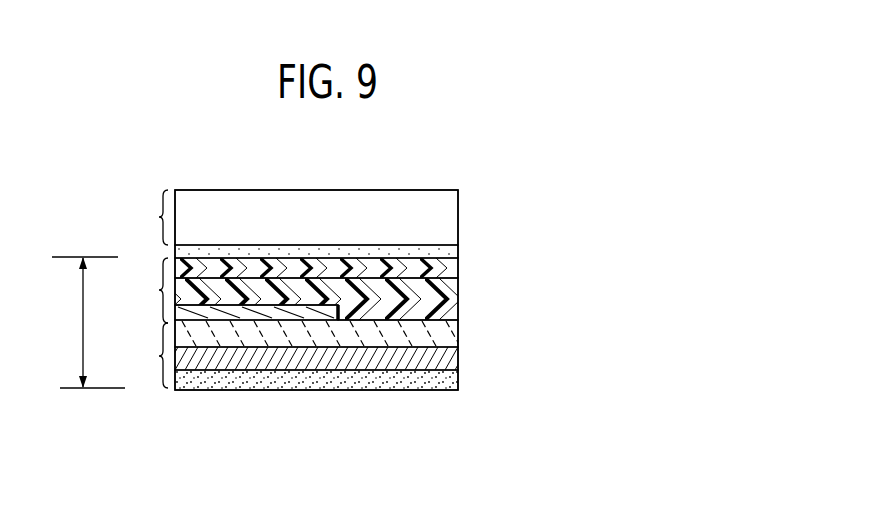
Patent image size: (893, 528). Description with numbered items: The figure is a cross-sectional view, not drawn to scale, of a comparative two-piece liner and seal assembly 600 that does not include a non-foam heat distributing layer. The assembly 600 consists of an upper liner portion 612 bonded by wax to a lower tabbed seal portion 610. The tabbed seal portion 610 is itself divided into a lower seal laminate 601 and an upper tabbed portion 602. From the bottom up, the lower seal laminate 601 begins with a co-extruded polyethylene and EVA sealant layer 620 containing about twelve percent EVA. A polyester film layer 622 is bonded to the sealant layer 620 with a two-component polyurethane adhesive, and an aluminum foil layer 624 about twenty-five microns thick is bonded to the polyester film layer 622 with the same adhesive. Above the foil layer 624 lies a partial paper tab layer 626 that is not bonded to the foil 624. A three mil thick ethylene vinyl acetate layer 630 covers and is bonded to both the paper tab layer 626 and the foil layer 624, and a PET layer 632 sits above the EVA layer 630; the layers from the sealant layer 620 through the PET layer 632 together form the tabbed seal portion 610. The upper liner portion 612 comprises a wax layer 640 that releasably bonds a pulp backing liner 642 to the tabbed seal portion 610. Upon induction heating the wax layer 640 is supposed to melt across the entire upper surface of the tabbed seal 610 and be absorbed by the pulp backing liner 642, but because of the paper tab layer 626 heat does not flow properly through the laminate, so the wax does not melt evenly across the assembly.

The comparative liner and seal assembly 600 is at (496, 195).
The pulp backing liner 642 is at (405, 215).
The wax layer 640 is at (459, 250).
The PET layer 632 is at (459, 266).
The ethylene vinyl acetate layer 630 is at (441, 309).
The paper tab layer 626 is at (280, 315).
The aluminum foil layer 624 is at (441, 337).
The polyester film layer 622 is at (441, 356).
The sealant layer 620 is at (418, 392).
The upper liner portion 612 is at (146, 220).
The upper tabbed portion 602 is at (154, 305).
The lower seal laminate 601 is at (157, 368).
The tabbed seal portion 610 is at (84, 322).